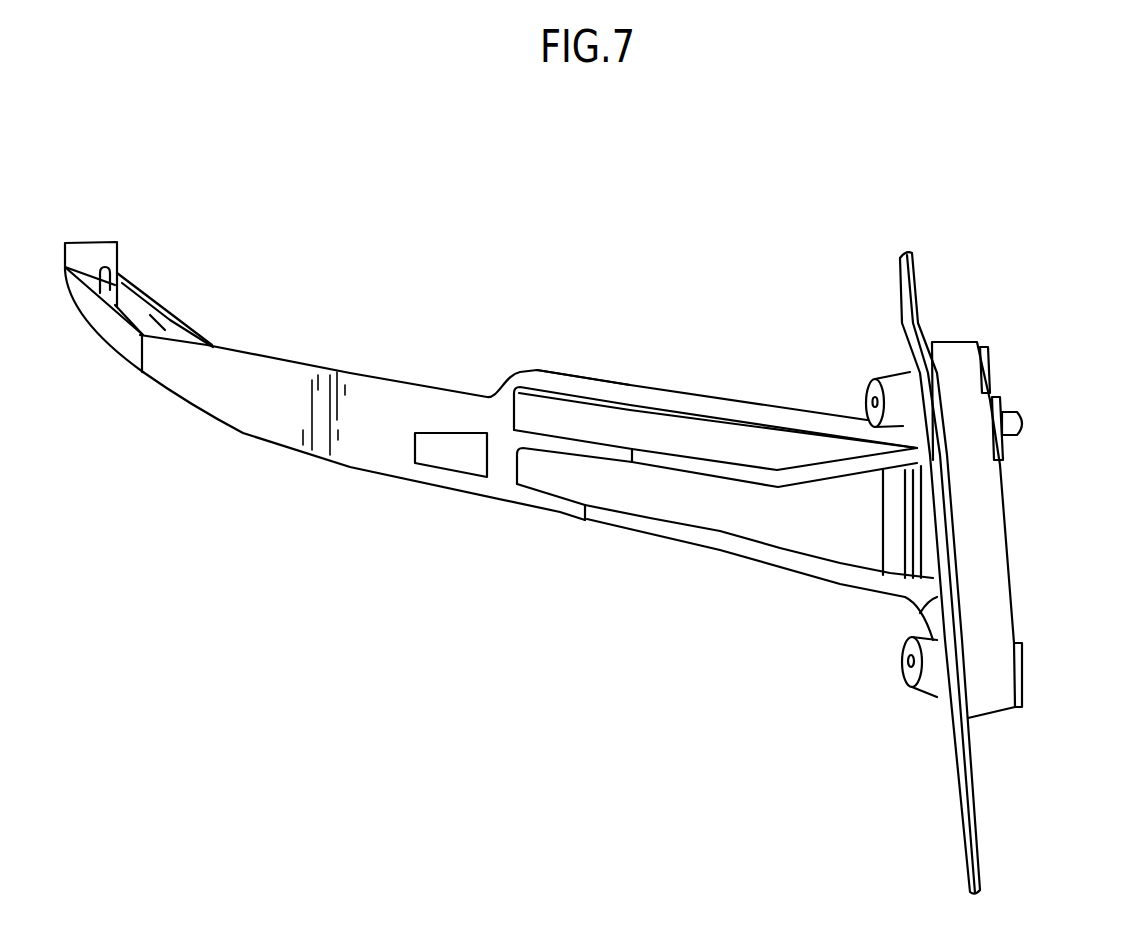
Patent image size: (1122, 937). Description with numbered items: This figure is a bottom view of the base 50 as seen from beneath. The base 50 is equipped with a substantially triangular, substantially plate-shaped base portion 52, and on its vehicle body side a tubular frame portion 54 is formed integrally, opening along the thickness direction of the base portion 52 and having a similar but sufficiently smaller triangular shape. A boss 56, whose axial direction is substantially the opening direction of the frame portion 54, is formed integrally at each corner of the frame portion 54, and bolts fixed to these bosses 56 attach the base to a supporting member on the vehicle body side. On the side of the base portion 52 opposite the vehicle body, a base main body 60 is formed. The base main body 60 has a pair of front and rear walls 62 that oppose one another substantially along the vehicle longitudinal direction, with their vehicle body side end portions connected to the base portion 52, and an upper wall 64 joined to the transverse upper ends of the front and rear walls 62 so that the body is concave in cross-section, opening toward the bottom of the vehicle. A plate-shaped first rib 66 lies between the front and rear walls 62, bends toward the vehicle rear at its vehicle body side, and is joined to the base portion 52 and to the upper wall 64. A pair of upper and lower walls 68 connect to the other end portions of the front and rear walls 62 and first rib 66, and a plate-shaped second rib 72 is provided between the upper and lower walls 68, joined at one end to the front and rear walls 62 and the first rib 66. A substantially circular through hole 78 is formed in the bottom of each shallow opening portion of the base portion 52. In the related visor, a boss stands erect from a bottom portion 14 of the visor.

The bottom portion 14 is at (107, 253).
The base 50 is at (765, 232).
The base portion 52 is at (923, 320).
The frame portion 54 is at (970, 338).
The boss 56 is at (990, 363).
The base main body 60 is at (698, 388).
The front and rear walls 62 is at (762, 405).
The upper wall 64 is at (727, 512).
The first rib 66 is at (707, 480).
The upper and lower walls 68 is at (160, 300).
The second rib 72 is at (150, 330).
The through hole 78 is at (868, 395).